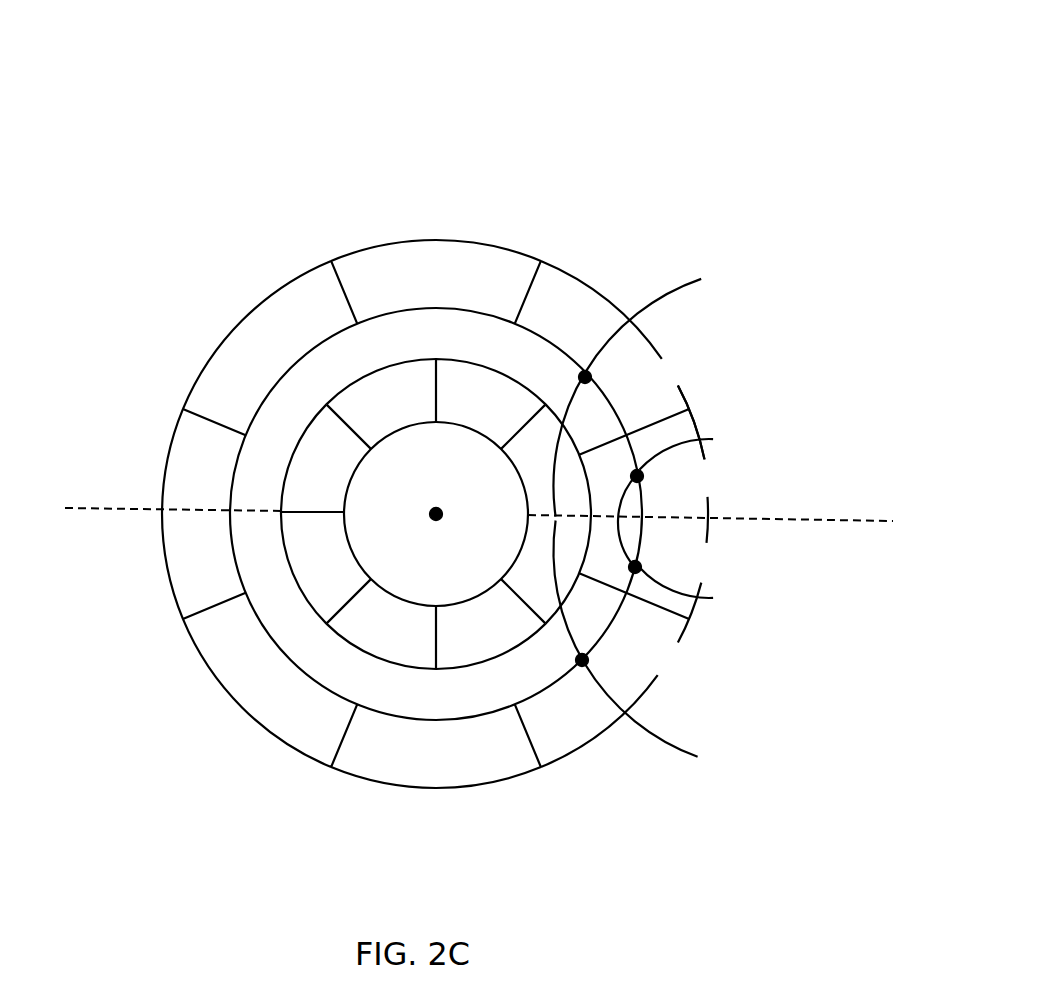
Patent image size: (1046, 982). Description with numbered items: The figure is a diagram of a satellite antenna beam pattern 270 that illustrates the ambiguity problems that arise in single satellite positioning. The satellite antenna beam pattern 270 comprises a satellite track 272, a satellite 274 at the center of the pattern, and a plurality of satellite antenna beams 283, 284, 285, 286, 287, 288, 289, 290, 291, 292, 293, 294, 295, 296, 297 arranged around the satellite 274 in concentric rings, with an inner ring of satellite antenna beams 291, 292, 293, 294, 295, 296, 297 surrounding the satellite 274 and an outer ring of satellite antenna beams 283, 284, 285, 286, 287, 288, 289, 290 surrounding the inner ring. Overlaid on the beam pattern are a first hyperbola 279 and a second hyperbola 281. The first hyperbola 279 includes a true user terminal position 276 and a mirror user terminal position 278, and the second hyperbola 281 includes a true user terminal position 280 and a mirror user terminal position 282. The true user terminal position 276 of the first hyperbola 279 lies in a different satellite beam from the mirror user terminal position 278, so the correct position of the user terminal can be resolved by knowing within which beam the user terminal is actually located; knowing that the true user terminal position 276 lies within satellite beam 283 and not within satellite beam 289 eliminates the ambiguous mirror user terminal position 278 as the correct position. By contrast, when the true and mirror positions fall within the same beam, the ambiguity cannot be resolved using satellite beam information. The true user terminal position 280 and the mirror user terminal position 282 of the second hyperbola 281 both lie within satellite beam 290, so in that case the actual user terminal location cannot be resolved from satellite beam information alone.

The satellite antenna beam pattern 270 is at (773, 69).
The satellite track 272 is at (860, 521).
The satellite 274 is at (434, 522).
The true user terminal position 276 is at (583, 373).
The mirror user terminal position 278 is at (580, 665).
The first hyperbola 279 is at (687, 288).
The true user terminal position 280 is at (641, 481).
The second hyperbola 281 is at (700, 608).
The mirror user terminal position 282 is at (630, 565).
The satellite antenna beam 283 is at (574, 272).
The satellite antenna beam 284 is at (455, 239).
The satellite antenna beam 285 is at (262, 300).
The satellite antenna beam 286 is at (170, 456).
The satellite antenna beam 287 is at (238, 703).
The satellite antenna beam 288 is at (438, 789).
The satellite antenna beam 289 is at (576, 758).
The satellite antenna beam 290 is at (690, 418).
The satellite antenna beam 291 is at (491, 624).
The satellite antenna beam 292 is at (546, 513).
The satellite antenna beam 293 is at (491, 390).
The satellite antenna beam 294 is at (381, 404).
The satellite antenna beam 295 is at (312, 459).
The satellite antenna beam 296 is at (326, 569).
The satellite antenna beam 297 is at (381, 637).